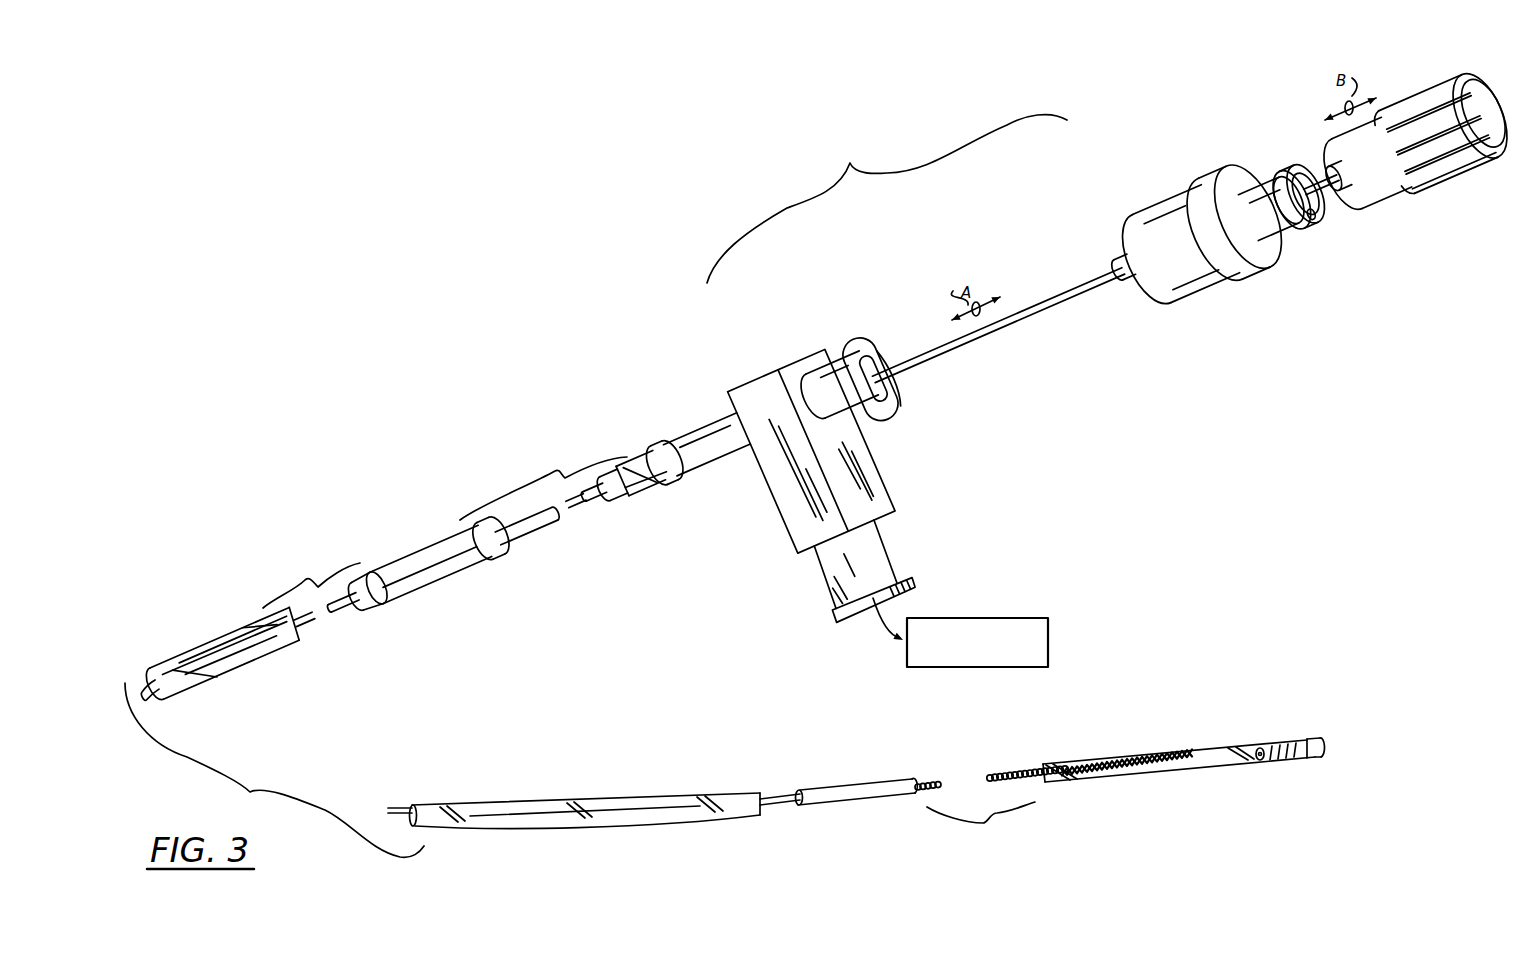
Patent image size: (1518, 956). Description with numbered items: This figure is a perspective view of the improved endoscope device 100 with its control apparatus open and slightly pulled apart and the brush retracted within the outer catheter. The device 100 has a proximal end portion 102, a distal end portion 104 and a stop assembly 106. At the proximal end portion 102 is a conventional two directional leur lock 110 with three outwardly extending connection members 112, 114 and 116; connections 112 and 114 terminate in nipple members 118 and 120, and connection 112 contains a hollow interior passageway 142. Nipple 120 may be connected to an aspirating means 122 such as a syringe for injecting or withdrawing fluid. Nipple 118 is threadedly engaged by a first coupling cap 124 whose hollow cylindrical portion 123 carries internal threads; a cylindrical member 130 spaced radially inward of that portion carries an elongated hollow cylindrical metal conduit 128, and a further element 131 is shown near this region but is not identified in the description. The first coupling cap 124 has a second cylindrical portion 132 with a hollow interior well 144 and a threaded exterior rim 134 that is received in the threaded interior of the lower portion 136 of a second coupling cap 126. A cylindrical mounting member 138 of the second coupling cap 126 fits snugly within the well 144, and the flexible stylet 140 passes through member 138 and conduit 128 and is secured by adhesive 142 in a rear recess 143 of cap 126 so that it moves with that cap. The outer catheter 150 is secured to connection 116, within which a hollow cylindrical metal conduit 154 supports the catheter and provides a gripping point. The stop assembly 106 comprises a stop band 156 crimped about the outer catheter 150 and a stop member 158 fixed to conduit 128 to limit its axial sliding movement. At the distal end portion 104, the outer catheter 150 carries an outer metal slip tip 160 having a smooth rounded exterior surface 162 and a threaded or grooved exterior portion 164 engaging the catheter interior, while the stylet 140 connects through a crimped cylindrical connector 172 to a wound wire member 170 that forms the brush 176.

The endoscope device 100 is at (1080, 470).
The proximal end portion 102 is at (850, 163).
The distal end portion 104 is at (1233, 695).
The stop assembly 106 is at (399, 530).
The two directional leur lock 110 is at (746, 376).
The connection member 112 is at (847, 421).
The connection member 114 is at (887, 537).
The connection member 116 is at (698, 457).
The nipple member 118 is at (860, 338).
The nipple member 120 is at (830, 617).
The aspirating means 122 is at (1048, 634).
The hollow cylindrical portion 123 is at (1175, 210).
The first coupling cap 124 is at (1181, 262).
The second coupling cap 126 is at (1456, 190).
The hollow cylindrical metal conduit 128 is at (1020, 320).
The cylindrical member 130 is at (1133, 283).
The stylet hub 131 is at (1116, 273).
The second cylindrical portion 132 is at (1258, 190).
The threaded exterior rim 134 is at (1291, 181).
The lower portion 136 is at (1387, 194).
The cylindrical mounting member 138 is at (1330, 164).
The flexible stylet 140 is at (1320, 205).
The hollow interior passageway 142 is at (1473, 102).
The rear recess 143 is at (1498, 146).
The hollow interior well 144 is at (1306, 216).
The outer catheter 150 is at (653, 483).
The hollow cylindrical metal conduit 154 is at (622, 500).
The stop band 156 is at (447, 572).
The stop member 158 is at (398, 592).
The outer metal slip tip 160 is at (1318, 737).
The smooth rounded exterior surface 162 is at (1322, 752).
The threaded or grooved exterior portion 164 is at (1288, 757).
The wound wire member 170 is at (1012, 777).
The crimped cylindrical connector 172 is at (818, 800).
The brush 176 is at (1180, 752).